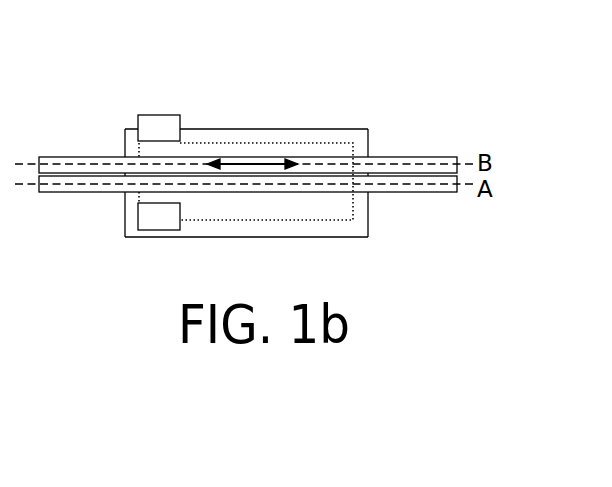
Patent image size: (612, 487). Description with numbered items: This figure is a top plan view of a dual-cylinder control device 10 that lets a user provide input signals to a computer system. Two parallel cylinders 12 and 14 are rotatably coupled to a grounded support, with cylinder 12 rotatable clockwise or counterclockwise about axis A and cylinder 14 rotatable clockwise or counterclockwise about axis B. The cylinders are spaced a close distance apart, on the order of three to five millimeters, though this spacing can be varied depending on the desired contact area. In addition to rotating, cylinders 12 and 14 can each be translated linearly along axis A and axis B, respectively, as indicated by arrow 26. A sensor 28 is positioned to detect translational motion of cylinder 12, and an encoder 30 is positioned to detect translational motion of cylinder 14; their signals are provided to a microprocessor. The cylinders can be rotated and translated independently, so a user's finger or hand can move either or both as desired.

The dual-cylinder control device 10 is at (399, 59).
The cylinder 12 is at (414, 186).
The cylinder 14 is at (410, 165).
The arrow 26 is at (248, 166).
The sensor 28 is at (160, 222).
The encoder 30 is at (145, 122).